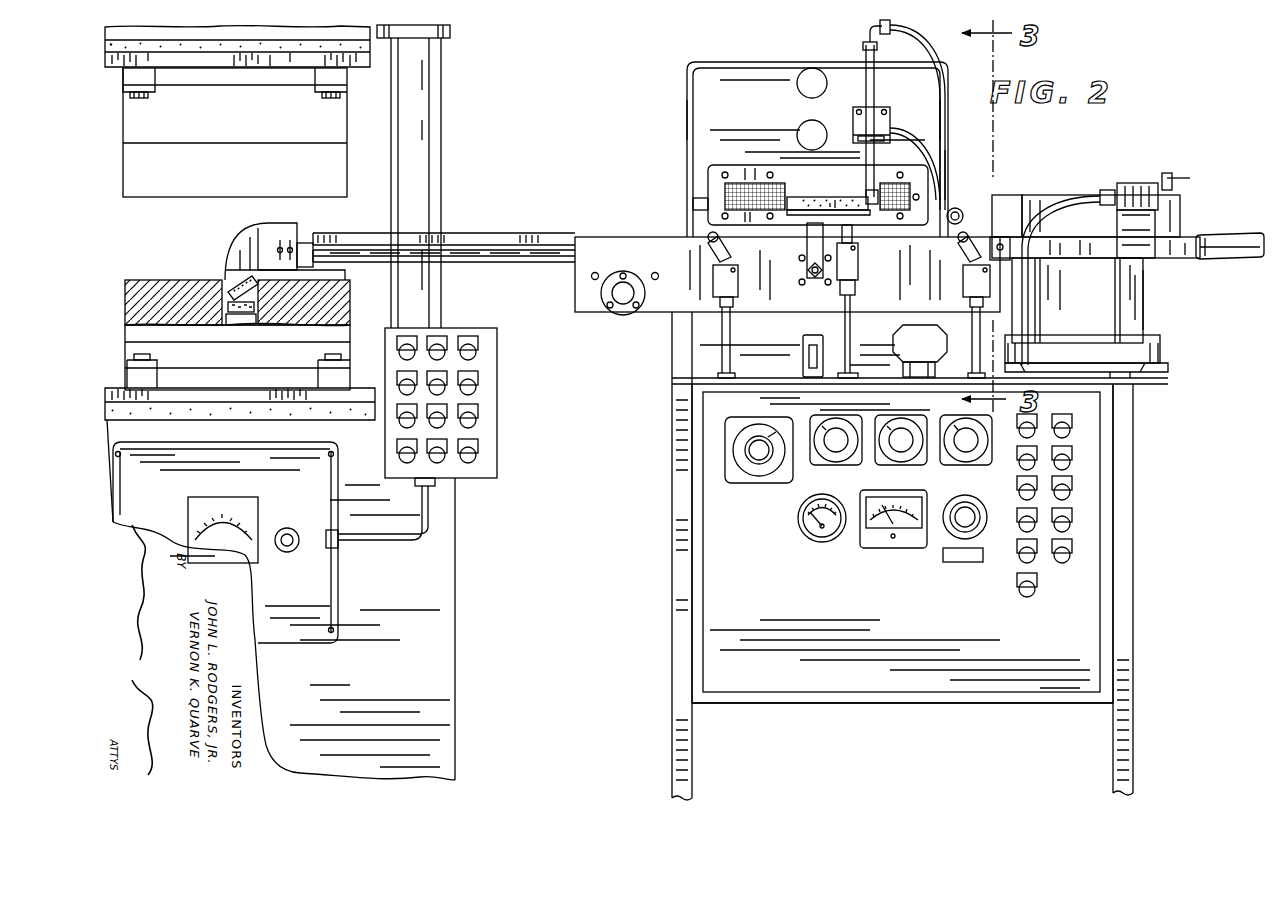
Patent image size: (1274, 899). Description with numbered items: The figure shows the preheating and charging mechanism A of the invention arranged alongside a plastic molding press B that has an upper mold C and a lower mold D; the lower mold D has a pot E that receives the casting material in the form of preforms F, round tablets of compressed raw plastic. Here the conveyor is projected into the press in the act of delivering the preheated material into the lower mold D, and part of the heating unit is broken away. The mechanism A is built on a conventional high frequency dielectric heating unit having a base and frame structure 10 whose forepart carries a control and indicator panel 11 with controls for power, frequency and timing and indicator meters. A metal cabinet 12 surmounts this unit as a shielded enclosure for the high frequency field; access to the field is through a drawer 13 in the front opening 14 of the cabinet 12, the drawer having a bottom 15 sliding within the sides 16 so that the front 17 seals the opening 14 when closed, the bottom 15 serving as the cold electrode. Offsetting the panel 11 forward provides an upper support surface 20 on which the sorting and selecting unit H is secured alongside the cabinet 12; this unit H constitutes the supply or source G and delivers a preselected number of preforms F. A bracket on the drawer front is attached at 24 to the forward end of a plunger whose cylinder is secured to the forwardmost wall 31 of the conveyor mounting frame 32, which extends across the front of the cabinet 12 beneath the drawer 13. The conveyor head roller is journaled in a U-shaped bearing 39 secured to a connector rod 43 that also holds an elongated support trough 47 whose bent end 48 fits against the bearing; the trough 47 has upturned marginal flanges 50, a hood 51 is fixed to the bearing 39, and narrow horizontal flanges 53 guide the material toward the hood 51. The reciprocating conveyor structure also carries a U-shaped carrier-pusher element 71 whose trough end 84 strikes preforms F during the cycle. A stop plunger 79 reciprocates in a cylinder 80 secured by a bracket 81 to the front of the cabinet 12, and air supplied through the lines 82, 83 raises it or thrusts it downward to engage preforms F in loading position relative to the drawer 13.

The base and frame structure 10 is at (688, 618).
The control and indicator panel 11 is at (705, 517).
The cabinet 12 is at (722, 63).
The drawer 13 is at (702, 170).
The front opening 14 is at (798, 180).
The drawer bottom 15 is at (800, 205).
The cabinet sides 16 is at (687, 105).
The drawer front 17 is at (710, 180).
The upper support surface 20 is at (680, 372).
The bracket attachment 24 is at (820, 293).
The forwardmost wall 31 is at (596, 240).
The conveyor mounting frame 32 is at (575, 300).
The head roller bearing 39 is at (314, 240).
The connector rod 43 is at (515, 265).
The support pan or trough 47 is at (462, 265).
The trough end 48 is at (345, 285).
The marginal flanges 50 is at (462, 238).
The hood 51 is at (265, 234).
The horizontal flanges 53 is at (375, 234).
The carrier-pusher element 71 is at (958, 208).
The stop member or plunger 79 is at (944, 143).
The cylinder 80 is at (876, 93).
The bracket 81 is at (853, 115).
The fluid line 82 is at (897, 128).
The fluid line 83 is at (902, 35).
The trough end 84 is at (693, 205).
The preheating and charging mechanism A is at (658, 398).
The plastic molding press B is at (460, 659).
The upper mold C is at (155, 197).
The lower mold D is at (135, 282).
The pot E is at (233, 288).
The preforms F is at (228, 300).
The supply or source G is at (1128, 254).
The sorting and selecting unit H is at (1122, 312).